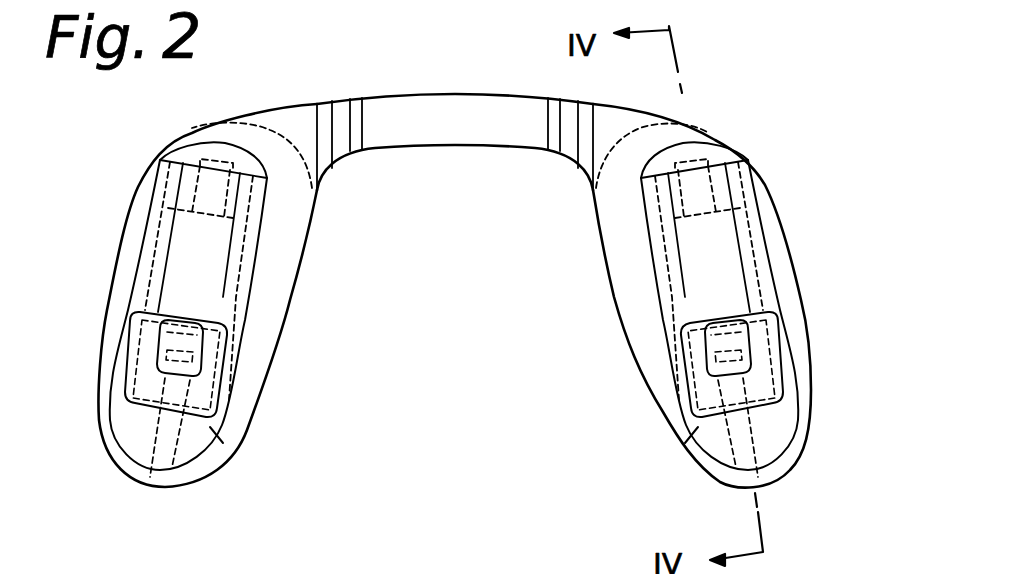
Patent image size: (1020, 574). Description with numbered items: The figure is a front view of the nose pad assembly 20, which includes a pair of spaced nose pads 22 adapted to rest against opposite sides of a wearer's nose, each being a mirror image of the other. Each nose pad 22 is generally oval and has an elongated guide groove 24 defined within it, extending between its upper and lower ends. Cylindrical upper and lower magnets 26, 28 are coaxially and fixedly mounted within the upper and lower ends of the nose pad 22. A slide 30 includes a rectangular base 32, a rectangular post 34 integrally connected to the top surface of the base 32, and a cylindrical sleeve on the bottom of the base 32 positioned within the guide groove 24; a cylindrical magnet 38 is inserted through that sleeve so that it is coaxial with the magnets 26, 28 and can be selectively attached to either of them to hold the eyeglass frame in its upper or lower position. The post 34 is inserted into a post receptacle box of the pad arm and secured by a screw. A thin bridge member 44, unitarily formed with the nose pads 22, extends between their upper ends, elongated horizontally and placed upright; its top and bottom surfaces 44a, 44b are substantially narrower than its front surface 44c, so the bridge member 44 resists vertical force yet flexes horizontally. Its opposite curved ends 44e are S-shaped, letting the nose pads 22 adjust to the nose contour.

The nose pad assembly 20 is at (428, 282).
The nose pad 22 is at (250, 383).
The guide groove 24 is at (226, 277).
The upper magnet 26 is at (690, 168).
The lower magnet 28 is at (153, 490).
The slide 30 is at (153, 388).
The base 32 is at (735, 420).
The post 34 is at (193, 341).
The magnet 38 is at (230, 449).
The bridge member 44 is at (438, 125).
The top surface 44a is at (407, 92).
The bottom surface 44b is at (410, 151).
The front surface 44c is at (478, 133).
The curved ends 44e is at (330, 103).